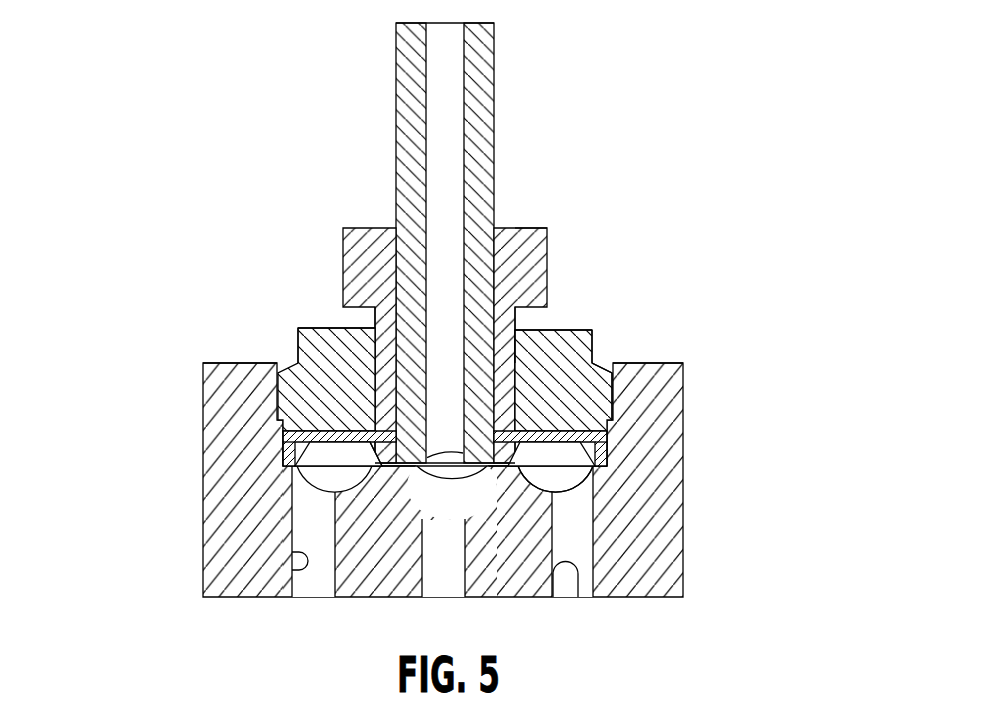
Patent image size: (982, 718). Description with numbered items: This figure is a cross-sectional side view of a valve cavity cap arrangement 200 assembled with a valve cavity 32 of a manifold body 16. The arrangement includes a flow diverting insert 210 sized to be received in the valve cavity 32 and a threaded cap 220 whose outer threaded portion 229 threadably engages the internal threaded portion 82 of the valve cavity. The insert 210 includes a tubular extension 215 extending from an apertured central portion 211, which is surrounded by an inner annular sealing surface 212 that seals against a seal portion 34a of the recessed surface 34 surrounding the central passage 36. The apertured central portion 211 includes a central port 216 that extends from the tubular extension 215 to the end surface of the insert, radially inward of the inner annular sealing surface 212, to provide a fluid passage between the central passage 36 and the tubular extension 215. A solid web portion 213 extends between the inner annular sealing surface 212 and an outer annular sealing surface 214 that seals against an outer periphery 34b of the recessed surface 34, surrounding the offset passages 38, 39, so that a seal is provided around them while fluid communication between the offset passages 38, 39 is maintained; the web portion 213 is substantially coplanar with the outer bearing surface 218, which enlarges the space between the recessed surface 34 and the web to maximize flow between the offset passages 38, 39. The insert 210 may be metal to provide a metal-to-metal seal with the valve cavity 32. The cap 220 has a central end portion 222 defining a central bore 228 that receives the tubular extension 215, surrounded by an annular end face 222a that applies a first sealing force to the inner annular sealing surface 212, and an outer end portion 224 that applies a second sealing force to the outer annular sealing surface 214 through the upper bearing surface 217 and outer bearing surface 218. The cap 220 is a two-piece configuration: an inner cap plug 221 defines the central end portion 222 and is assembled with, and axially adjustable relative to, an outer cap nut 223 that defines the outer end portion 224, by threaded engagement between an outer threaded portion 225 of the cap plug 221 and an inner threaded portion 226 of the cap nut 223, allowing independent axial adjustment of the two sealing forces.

The valve cavity cap arrangement 200 is at (188, 271).
The manifold body 16 is at (660, 492).
The valve cavity 32 is at (292, 385).
The recessed surface 34 is at (605, 398).
The seal portion 34a is at (602, 395).
The outer periphery 34b is at (284, 460).
The central passage 36 is at (462, 566).
The offset passage 38 is at (572, 578).
The offset passage 39 is at (296, 560).
The internal threaded portion 82 is at (288, 405).
The flow diverting insert 210 is at (486, 493).
The apertured central portion 211 is at (402, 480).
The inner annular sealing surface 212 is at (378, 468).
The web portion 213 is at (573, 490).
The outer annular sealing surface 214 is at (292, 470).
The tubular extension 215 is at (538, 229).
The central port 216 is at (406, 467).
The upper bearing surface 217 is at (528, 342).
The outer bearing surface 218 is at (600, 445).
The threaded cap 220 is at (572, 284).
The inner cap plug 221 is at (375, 278).
The central end portion 222 is at (330, 380).
The annular end face 222a is at (556, 362).
The outer cap nut 223 is at (585, 395).
The outer end portion 224 is at (282, 431).
The outer threaded portion 225 is at (331, 462).
The inner threaded portion 226 is at (295, 365).
The central bore 228 is at (396, 332).
The outer threaded portion 229 is at (612, 400).